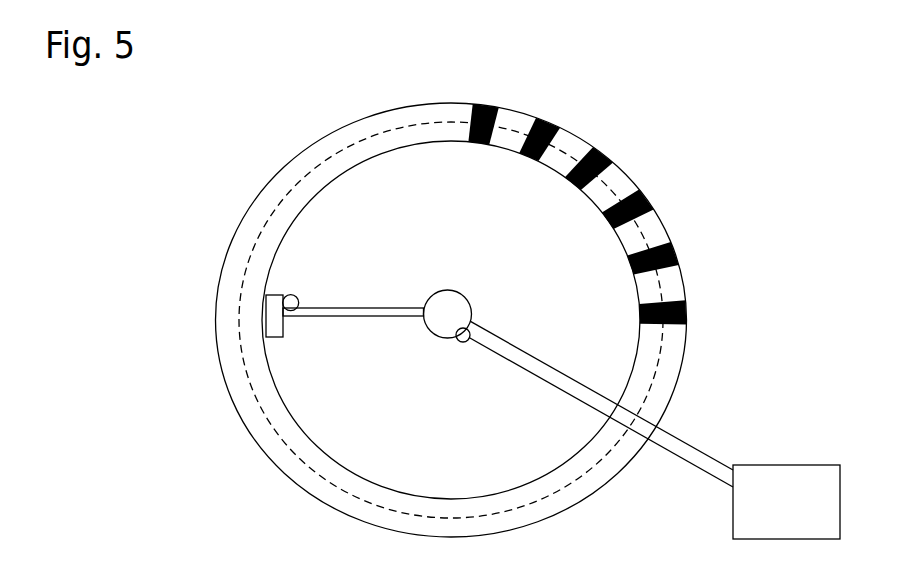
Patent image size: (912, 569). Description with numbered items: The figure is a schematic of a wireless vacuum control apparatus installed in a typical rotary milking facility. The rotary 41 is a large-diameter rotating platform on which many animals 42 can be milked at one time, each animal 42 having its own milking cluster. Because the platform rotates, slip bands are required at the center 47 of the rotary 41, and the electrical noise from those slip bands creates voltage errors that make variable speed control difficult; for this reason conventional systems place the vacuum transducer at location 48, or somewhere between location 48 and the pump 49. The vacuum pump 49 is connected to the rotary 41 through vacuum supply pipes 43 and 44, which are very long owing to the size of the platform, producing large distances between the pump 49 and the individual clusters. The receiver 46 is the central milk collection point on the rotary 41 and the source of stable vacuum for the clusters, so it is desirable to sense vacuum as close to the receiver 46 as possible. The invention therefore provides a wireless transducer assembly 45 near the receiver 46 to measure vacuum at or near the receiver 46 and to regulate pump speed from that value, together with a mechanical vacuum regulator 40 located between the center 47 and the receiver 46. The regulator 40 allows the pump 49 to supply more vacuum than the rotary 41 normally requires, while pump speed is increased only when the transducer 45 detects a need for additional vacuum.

The mechanical vacuum regulator 40 is at (346, 332).
The rotary 41 is at (683, 162).
The animals 42 is at (668, 238).
The vacuum supply pipe 43 is at (533, 356).
The vacuum supply pipe 44 is at (373, 304).
The wireless transducer assembly 45 is at (297, 294).
The receiver 46 is at (283, 332).
The center of the rotary 47 is at (438, 327).
The transducer location 48 is at (472, 341).
The vacuum pump 49 is at (798, 466).